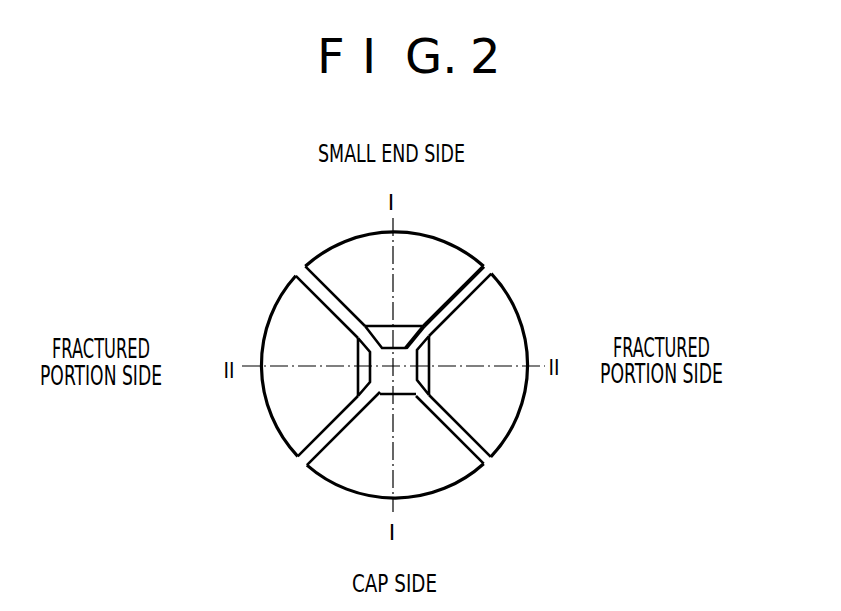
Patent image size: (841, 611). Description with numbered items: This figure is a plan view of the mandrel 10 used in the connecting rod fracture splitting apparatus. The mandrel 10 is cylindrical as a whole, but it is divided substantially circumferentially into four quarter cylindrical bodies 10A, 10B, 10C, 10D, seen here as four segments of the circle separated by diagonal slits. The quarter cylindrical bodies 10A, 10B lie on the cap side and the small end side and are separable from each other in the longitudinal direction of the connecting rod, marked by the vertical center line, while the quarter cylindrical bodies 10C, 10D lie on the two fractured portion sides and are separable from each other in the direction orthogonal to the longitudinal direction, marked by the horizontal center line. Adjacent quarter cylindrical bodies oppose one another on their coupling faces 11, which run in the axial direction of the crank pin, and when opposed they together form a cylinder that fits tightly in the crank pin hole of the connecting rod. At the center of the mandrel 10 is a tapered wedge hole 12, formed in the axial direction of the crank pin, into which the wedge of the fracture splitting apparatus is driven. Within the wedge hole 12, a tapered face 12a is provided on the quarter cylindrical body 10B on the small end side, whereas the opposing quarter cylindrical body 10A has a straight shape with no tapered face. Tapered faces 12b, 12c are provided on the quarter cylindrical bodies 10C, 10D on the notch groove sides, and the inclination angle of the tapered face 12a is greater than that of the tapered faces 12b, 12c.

The mandrel 10 is at (402, 347).
The quarter cylindrical body 10A is at (470, 477).
The quarter cylindrical body 10B is at (337, 243).
The quarter cylindrical body 10C is at (272, 418).
The quarter cylindrical body 10D is at (513, 303).
The coupling face 11 is at (303, 268).
The tapered wedge hole 12 is at (383, 383).
The tapered face 12a is at (403, 338).
The tapered face 12b is at (368, 353).
The tapered face 12c is at (430, 375).